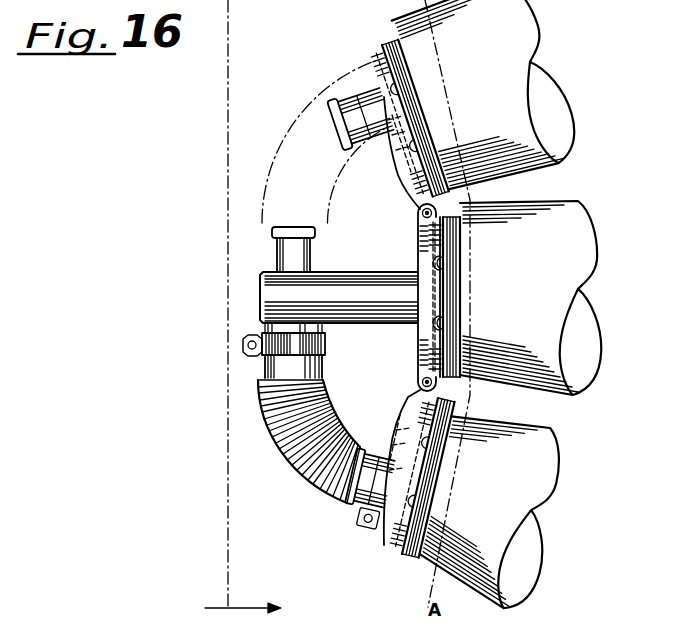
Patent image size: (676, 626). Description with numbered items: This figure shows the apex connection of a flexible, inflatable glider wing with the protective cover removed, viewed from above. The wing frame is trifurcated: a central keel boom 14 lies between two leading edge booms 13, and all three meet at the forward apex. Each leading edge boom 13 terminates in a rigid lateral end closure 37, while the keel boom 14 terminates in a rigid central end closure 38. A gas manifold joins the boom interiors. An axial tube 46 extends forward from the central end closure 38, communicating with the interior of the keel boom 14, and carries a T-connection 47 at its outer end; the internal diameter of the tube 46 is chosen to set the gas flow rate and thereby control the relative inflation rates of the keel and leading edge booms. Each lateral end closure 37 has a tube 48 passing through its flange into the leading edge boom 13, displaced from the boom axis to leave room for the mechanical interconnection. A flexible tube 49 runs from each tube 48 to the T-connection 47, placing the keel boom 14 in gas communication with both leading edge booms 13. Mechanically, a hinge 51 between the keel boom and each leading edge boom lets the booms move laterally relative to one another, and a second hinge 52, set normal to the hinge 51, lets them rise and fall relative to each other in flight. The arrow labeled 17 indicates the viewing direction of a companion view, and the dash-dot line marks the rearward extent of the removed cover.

The leading edge boom 13 is at (560, 100).
The keel boom 14 is at (585, 333).
The view direction arrow 17 is at (243, 597).
The lateral end closure 37 is at (391, 44).
The central end closure 38 is at (475, 205).
The axial tube 46 is at (338, 283).
The T-connection 47 is at (268, 330).
The tube 48 is at (370, 97).
The flexible tube 49 is at (318, 116).
The hinge 51 is at (422, 212).
The second hinge 52 is at (395, 182).